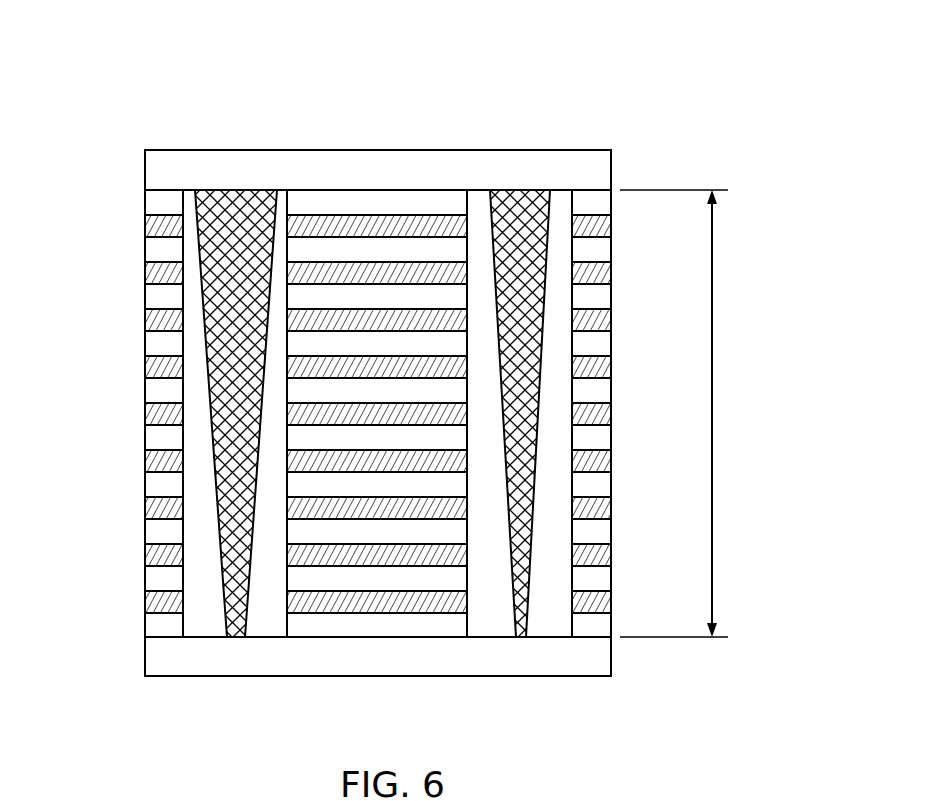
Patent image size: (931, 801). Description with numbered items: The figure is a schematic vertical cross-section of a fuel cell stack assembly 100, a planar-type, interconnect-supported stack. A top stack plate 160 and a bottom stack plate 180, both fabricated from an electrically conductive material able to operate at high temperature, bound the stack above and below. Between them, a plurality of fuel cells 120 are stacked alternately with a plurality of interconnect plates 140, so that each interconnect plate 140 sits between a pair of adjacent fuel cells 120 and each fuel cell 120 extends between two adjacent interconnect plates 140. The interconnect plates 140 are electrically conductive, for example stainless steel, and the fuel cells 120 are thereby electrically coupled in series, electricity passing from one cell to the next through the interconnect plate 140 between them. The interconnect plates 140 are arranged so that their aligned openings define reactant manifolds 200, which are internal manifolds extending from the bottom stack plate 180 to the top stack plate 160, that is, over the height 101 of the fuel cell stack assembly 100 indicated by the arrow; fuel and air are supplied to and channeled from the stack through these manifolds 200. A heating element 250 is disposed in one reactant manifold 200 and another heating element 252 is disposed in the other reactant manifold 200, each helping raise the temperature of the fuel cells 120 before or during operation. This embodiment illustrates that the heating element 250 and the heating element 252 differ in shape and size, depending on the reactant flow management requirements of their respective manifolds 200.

The fuel cell stack assembly 100 is at (650, 75).
The height of the fuel cell stack assembly 101 is at (712, 402).
The fuel cell 120 is at (447, 247).
The interconnect plate 140 is at (328, 212).
The top stack plate 160 is at (400, 155).
The bottom stack plate 180 is at (538, 666).
The reactant manifold 200 is at (198, 350).
The heating element 250 is at (232, 305).
The heating element 252 is at (540, 258).